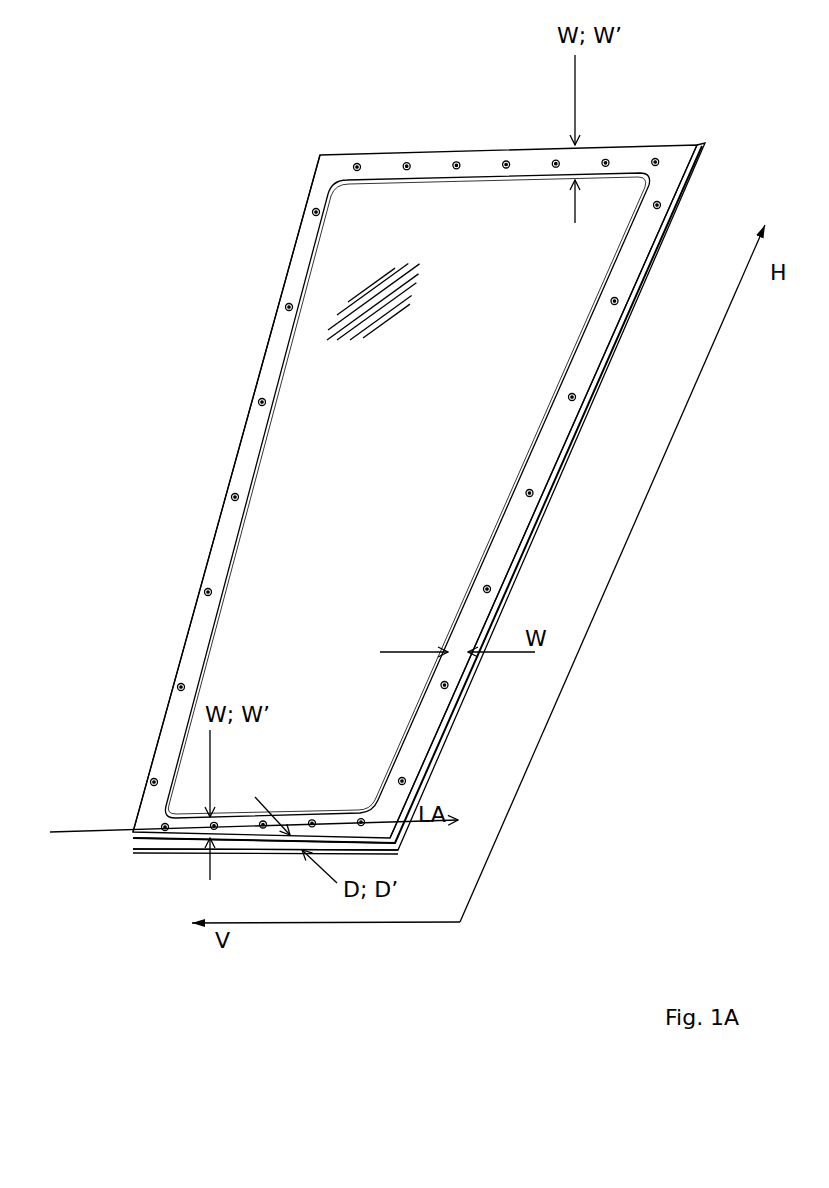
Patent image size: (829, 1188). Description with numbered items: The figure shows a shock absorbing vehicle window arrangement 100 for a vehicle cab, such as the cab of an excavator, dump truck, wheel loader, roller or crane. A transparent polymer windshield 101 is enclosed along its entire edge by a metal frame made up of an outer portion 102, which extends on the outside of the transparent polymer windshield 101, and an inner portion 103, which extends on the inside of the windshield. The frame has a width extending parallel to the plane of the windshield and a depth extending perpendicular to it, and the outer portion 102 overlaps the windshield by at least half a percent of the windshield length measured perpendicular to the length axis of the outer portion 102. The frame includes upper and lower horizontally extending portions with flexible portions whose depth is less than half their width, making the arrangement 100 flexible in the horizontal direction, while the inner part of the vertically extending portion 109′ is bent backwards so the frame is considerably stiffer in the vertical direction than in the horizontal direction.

The shock absorbing vehicle window arrangement 100 is at (202, 143).
The transparent polymer windshield 101 is at (406, 465).
The outer portion of the metal frame 102 is at (626, 157).
The inner portion of the metal frame 103 is at (693, 170).
The vertically extending portion of the metal frame 109′ is at (275, 363).